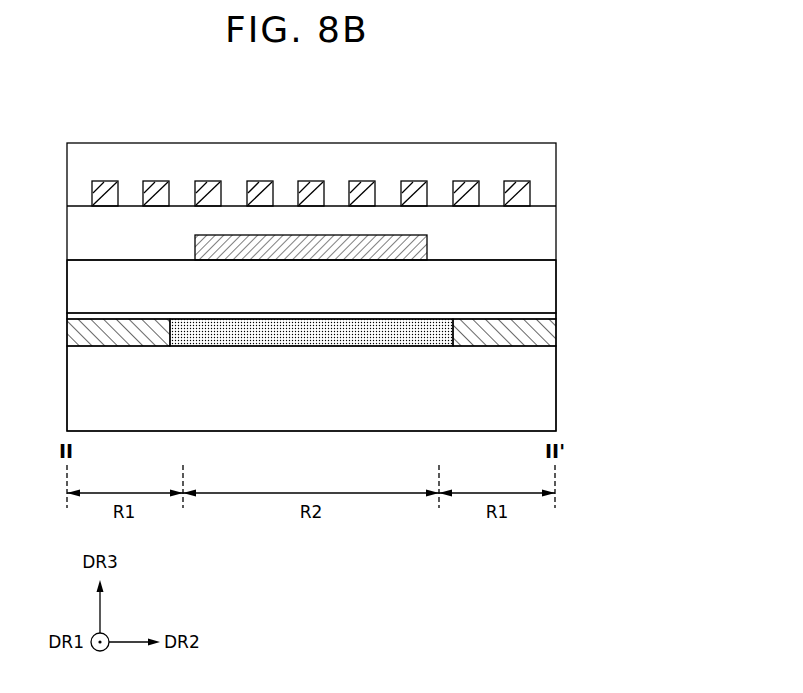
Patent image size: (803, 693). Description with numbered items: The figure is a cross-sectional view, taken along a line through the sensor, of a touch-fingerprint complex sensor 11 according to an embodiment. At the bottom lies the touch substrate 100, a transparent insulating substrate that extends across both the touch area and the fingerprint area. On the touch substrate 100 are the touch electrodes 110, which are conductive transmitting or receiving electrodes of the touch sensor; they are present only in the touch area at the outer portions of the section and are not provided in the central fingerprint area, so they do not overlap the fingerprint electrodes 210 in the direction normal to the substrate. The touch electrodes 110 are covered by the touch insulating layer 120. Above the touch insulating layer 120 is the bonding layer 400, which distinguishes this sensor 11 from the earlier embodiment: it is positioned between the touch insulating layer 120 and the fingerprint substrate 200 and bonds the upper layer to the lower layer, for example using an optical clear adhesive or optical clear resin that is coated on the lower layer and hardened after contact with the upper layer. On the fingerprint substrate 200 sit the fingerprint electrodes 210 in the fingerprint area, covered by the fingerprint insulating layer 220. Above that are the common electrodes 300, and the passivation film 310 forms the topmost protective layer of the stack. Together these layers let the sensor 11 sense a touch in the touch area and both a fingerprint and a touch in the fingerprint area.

The touch-fingerprint complex sensor 11 is at (548, 100).
The touch substrate 100 is at (547, 387).
The touch electrodes 110 is at (540, 332).
The touch insulating layer 120 is at (430, 335).
The fingerprint substrate 200 is at (547, 286).
The fingerprint electrodes 210 is at (340, 246).
The fingerprint insulating layer 220 is at (547, 236).
The common electrodes 300 is at (528, 190).
The passivation film 310 is at (547, 160).
The bonding layer 400 is at (556, 316).